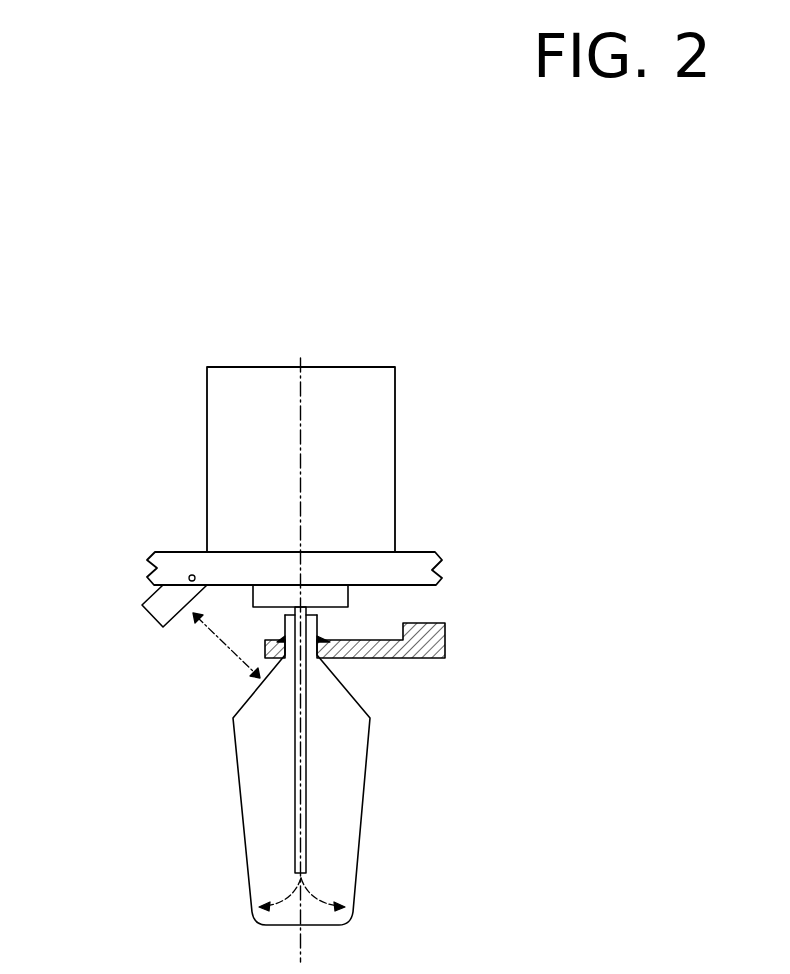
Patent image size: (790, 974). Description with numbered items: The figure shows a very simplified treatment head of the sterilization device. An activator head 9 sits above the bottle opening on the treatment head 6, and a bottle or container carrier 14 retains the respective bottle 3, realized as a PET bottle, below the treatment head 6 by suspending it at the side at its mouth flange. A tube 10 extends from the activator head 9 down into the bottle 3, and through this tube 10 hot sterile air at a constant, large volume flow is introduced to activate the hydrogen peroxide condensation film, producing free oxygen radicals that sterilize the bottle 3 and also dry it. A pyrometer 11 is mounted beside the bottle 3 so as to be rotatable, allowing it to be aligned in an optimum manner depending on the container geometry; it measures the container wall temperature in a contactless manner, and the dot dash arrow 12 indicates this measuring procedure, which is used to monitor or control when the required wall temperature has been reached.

The activator head 9 is at (367, 517).
The treatment head 6 is at (400, 570).
The pyrometer 11 is at (145, 608).
The dot dash arrow 12 is at (215, 637).
The bottle or container carrier 14 is at (443, 622).
The tube 10 is at (303, 730).
The bottle 3 is at (342, 827).